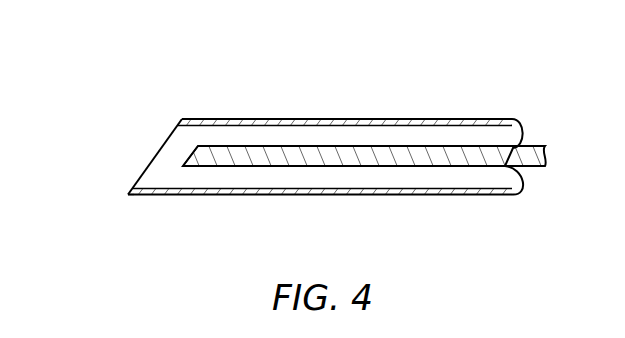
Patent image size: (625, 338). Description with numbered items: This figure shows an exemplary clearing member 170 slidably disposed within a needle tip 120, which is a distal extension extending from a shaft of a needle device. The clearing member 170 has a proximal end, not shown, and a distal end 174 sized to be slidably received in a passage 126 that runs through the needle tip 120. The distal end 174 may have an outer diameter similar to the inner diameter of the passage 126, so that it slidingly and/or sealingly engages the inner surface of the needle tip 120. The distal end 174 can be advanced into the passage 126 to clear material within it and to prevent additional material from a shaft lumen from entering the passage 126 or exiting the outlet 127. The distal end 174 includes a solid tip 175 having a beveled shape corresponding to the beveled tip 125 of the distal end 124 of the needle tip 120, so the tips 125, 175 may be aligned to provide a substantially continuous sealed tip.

The needle tip 120 is at (452, 109).
The distal end of the needle tip 124 is at (273, 118).
The beveled tip 125 is at (142, 196).
The passage 126 is at (288, 188).
The outlet 127 is at (138, 183).
The clearing member 170 is at (402, 177).
The distal end of the clearing member 174 is at (345, 147).
The solid tip 175 is at (188, 153).